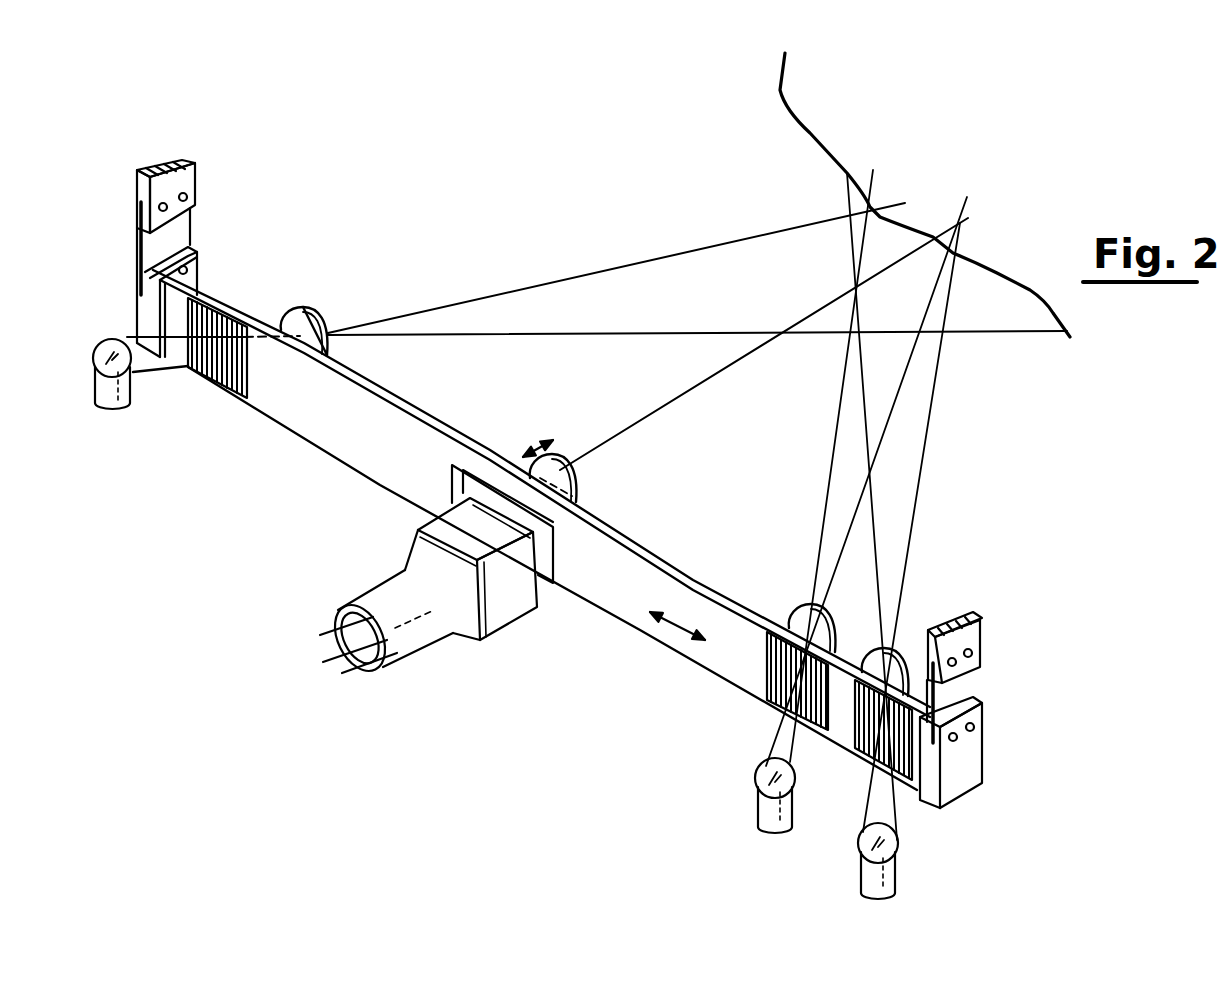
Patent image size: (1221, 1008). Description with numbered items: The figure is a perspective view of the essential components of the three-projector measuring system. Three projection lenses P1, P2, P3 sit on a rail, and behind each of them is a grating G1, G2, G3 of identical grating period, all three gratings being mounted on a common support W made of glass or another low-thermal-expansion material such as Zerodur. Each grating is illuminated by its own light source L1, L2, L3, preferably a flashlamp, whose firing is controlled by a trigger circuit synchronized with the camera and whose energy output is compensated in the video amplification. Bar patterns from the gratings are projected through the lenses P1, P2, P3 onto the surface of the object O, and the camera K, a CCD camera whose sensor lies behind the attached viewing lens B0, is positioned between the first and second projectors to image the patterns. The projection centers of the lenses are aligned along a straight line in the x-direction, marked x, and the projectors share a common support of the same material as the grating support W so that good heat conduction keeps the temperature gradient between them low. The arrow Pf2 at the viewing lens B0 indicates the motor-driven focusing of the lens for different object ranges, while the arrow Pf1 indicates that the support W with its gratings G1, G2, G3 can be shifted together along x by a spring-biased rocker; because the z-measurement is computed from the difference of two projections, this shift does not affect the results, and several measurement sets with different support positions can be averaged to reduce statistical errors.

The light source L1 is at (96, 378).
The light source L2 is at (757, 778).
The light source L3 is at (897, 835).
The grating G1 is at (222, 388).
The grating G2 is at (772, 683).
The grating G3 is at (858, 748).
The projection lens P1 is at (311, 308).
The projection lens P2 is at (800, 601).
The projection lens P3 is at (893, 648).
The viewing lens B0 is at (582, 488).
The camera K is at (505, 612).
The grating support W is at (313, 413).
The object to be measured O is at (808, 136).
The arrow Pf1 is at (683, 627).
The arrow Pf2 is at (527, 452).
The x-direction x is at (928, 695).